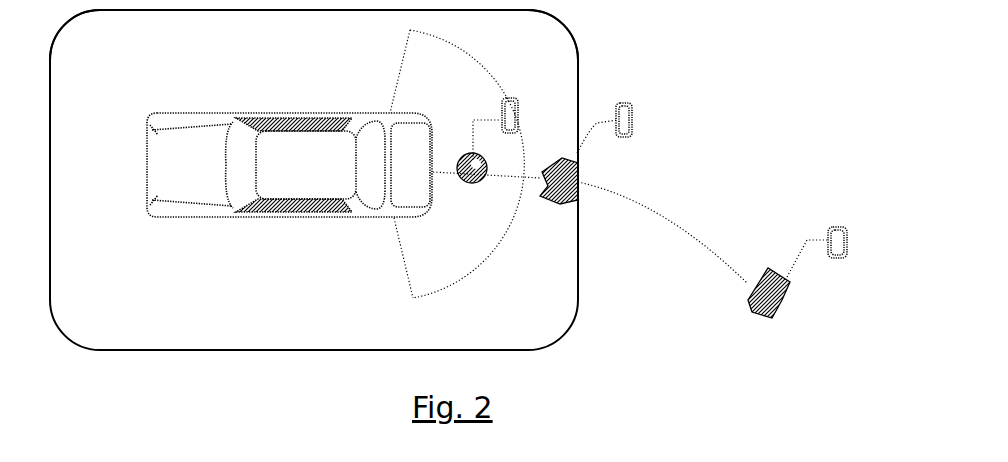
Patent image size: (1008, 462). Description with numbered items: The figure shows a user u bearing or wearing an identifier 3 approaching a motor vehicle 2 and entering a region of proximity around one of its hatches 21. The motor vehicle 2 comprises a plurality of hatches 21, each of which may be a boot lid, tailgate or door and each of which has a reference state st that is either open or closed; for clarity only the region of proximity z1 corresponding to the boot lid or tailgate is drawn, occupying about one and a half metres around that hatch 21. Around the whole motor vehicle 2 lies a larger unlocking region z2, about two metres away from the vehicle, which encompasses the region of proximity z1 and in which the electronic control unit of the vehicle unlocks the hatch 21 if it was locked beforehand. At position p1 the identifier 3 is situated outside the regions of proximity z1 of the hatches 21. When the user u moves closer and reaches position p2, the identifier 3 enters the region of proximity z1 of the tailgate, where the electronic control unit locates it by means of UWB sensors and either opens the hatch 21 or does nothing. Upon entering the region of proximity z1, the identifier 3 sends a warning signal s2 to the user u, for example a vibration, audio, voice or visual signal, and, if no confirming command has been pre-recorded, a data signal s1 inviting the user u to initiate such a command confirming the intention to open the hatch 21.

The motor vehicle 2 is at (215, 72).
The hatch 21 is at (289, 165).
The identifier 3 is at (840, 227).
The region of proximity z1 is at (468, 53).
The unlocking region z2 is at (572, 37).
The data signal s1 is at (475, 123).
The warning signal s2 is at (495, 107).
The position p1 is at (683, 222).
The position p2 is at (486, 197).
The user u is at (765, 278).